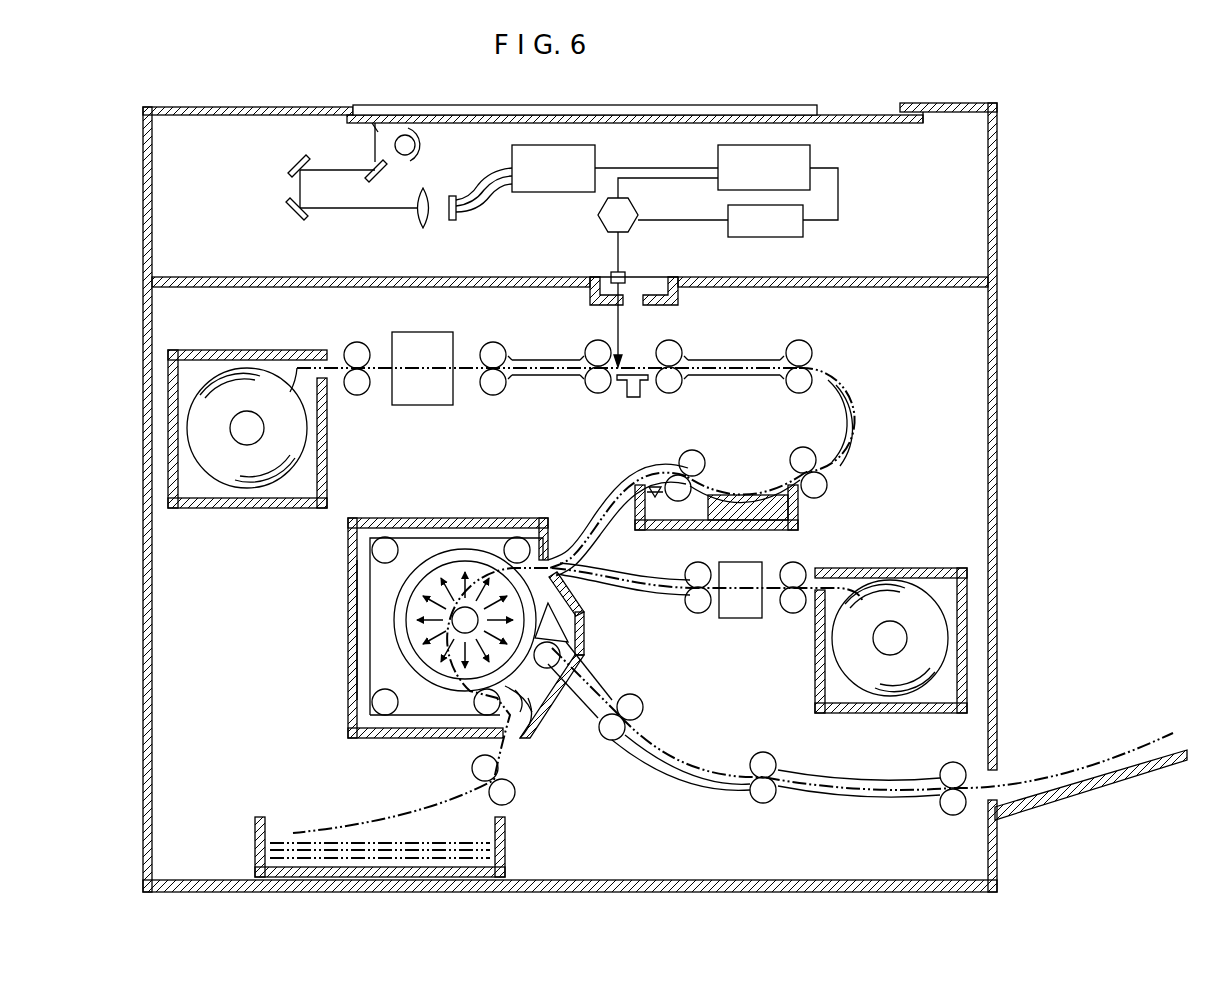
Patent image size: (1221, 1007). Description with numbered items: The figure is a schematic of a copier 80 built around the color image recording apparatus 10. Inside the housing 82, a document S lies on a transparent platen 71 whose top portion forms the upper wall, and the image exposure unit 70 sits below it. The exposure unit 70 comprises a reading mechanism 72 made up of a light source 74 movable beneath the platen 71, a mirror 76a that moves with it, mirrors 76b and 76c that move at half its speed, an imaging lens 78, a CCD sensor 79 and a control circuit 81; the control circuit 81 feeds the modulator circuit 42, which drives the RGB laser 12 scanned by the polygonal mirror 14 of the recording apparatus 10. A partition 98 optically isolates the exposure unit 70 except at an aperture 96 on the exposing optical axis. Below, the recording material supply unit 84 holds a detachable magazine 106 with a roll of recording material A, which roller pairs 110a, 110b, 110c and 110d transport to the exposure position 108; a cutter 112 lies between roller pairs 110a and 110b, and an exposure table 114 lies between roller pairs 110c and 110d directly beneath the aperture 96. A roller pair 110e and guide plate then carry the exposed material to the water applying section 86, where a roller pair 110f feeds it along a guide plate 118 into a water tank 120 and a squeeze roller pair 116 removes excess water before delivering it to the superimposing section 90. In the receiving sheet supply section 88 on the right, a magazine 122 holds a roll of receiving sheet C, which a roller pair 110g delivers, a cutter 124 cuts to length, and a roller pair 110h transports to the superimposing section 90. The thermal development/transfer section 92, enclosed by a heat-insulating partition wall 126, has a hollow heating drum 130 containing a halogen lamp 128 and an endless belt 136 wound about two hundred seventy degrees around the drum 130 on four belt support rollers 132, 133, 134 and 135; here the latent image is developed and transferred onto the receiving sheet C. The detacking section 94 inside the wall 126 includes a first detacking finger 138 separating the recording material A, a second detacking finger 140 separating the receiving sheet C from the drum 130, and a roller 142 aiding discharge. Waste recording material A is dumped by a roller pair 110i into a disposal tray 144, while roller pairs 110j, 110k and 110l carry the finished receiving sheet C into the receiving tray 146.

The color image recording apparatus 10 is at (858, 203).
The RGB laser 12 is at (803, 232).
The polygonal mirror 14 is at (606, 220).
The modulator circuit 42 is at (810, 160).
The image exposure unit 70 is at (552, 228).
The transparent platen 71 is at (858, 103).
The reading mechanism 72 is at (282, 190).
The light source 74 is at (410, 135).
The mirror 76a is at (372, 162).
The mirror 76b is at (293, 160).
The mirror 76c is at (300, 218).
The imaging lens 78 is at (427, 215).
The CCD sensor 79 is at (458, 216).
The copier 80 is at (697, 105).
The control circuit 81 is at (595, 160).
The housing 82 is at (997, 357).
The recording material supply unit 84 is at (350, 346).
The water applying section 86 is at (862, 468).
The receiving sheet supply section 88 is at (800, 712).
The superimposing section 90 is at (588, 558).
The thermal development/transfer section 92 is at (470, 492).
The detacking section 94 is at (590, 690).
The aperture 96 is at (635, 292).
The partition 98 is at (378, 277).
The magazine 106 is at (260, 510).
The exposure position 108 is at (620, 345).
The roller pair 110a is at (358, 395).
The roller pair 110b is at (493, 395).
The roller pair 110c is at (594, 393).
The roller pair 110d is at (684, 382).
The roller pair 110e is at (812, 350).
The roller pair 110f is at (805, 448).
The roller pair 110g is at (793, 613).
The roller pair 110h is at (697, 613).
The roller pair 110i is at (510, 800).
The roller pair 110j is at (614, 740).
The roller pair 110k is at (763, 803).
The roller pair 110l is at (952, 815).
The cutter 112 is at (440, 345).
The exposure table 114 is at (640, 400).
The squeeze roller pair 116 is at (692, 450).
The guide plate 118 is at (790, 482).
The water tank 120 is at (798, 510).
The magazine 122 is at (905, 568).
The cutter 124 is at (740, 618).
The heat-insulating partition wall 126 is at (348, 600).
The halogen lamp 128 is at (460, 605).
The heating drum 130 is at (420, 668).
The belt support roller 132 is at (518, 538).
The belt support roller 133 is at (385, 540).
The belt support roller 134 is at (383, 712).
The belt support roller 135 is at (480, 716).
The endless belt 136 is at (370, 650).
The first detacking finger 138 is at (535, 728).
The second detacking finger 140 is at (572, 610).
The roller 142 is at (562, 652).
The disposal tray 144 is at (255, 840).
The receiving tray 146 is at (1085, 787).
The recording material A is at (230, 378).
The receiving sheet C is at (925, 622).
The document S is at (773, 105).